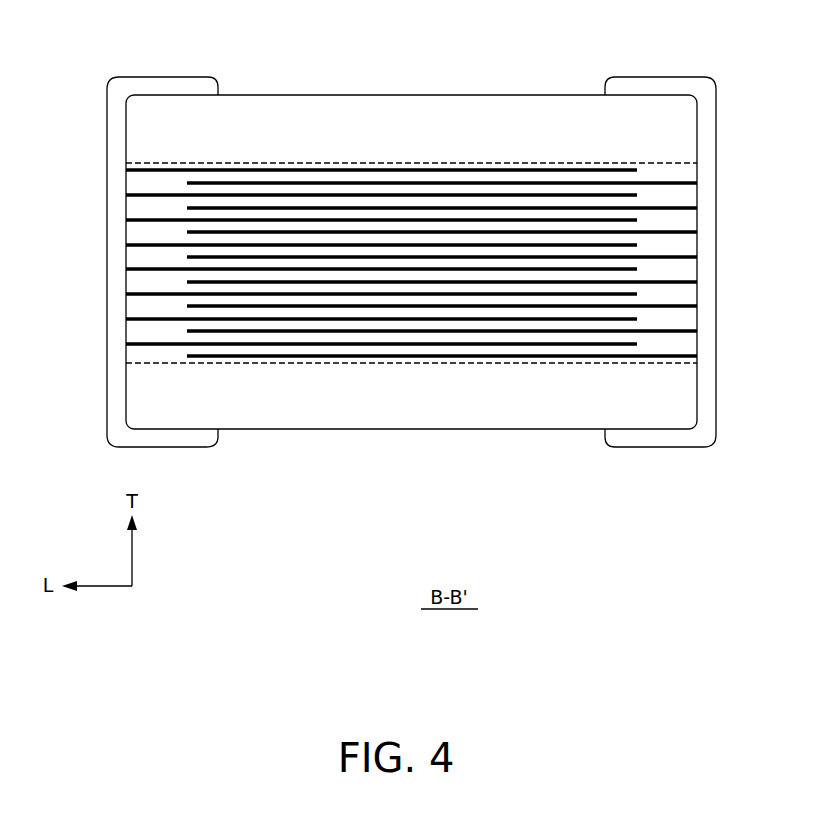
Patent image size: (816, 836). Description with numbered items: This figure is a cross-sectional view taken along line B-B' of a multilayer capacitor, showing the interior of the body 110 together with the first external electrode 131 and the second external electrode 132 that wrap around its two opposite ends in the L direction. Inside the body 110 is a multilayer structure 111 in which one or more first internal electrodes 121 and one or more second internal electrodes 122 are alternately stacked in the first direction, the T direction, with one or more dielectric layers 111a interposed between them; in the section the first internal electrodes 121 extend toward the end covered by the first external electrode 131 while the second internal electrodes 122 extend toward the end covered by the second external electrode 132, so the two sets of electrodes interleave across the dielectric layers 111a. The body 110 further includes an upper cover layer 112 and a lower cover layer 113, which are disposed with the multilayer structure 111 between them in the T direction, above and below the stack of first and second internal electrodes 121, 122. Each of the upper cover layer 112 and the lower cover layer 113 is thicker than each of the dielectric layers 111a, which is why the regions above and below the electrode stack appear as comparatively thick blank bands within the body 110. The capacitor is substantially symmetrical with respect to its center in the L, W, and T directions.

The body 110 is at (518, 95).
The multilayer structure 111 is at (280, 163).
The dielectric layer 111a is at (433, 177).
The upper cover layer 112 is at (354, 120).
The lower cover layer 113 is at (487, 410).
The first internal electrode 121 is at (136, 209).
The second internal electrode 122 is at (681, 208).
The first external electrode 131 is at (118, 152).
The second external electrode 132 is at (705, 137).